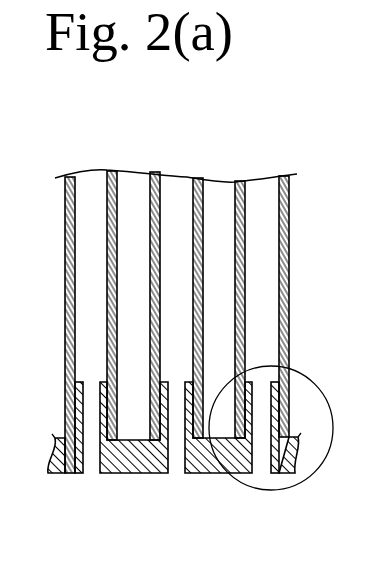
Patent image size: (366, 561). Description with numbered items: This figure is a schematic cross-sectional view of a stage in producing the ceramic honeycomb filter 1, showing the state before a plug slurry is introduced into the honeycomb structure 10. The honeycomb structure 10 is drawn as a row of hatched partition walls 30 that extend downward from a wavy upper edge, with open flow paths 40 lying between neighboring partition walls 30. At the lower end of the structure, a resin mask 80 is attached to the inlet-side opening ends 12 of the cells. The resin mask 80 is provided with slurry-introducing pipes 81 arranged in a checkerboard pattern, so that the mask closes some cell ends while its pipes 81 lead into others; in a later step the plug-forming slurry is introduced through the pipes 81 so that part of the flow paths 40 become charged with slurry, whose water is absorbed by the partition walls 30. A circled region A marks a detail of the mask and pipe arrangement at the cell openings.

The ceramic honeycomb filter 1 is at (196, 315).
The honeycomb structure 10 is at (296, 220).
The partition walls 30 is at (155, 173).
The flow paths 40 is at (222, 190).
The resin mask 80 is at (137, 460).
The slurry-introducing pipes 81 is at (80, 456).
The inlet-side opening ends 12 is at (197, 445).
The enlarged detail region A is at (303, 373).